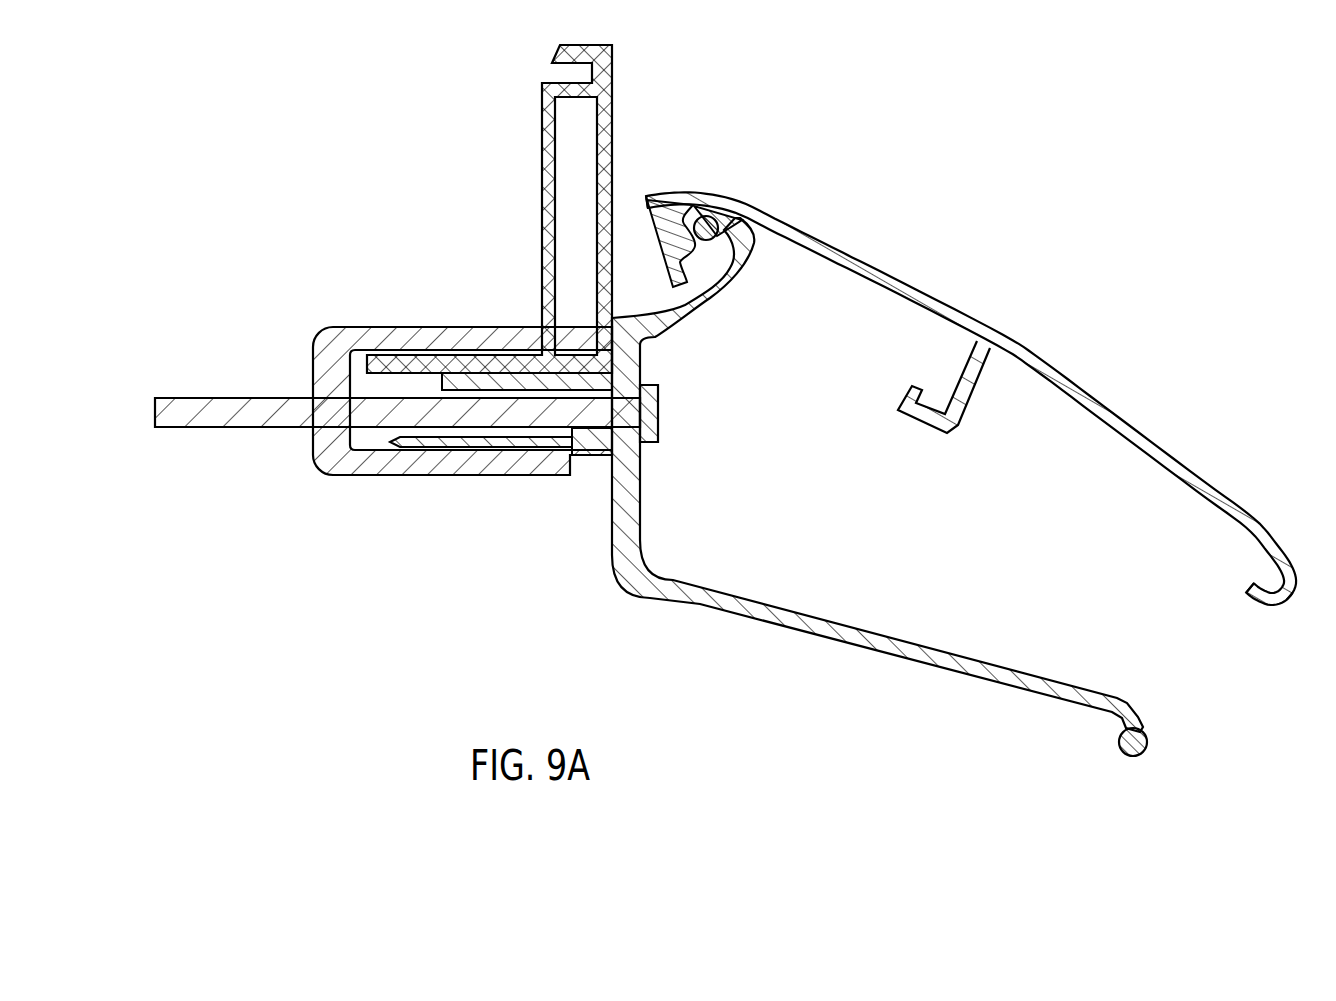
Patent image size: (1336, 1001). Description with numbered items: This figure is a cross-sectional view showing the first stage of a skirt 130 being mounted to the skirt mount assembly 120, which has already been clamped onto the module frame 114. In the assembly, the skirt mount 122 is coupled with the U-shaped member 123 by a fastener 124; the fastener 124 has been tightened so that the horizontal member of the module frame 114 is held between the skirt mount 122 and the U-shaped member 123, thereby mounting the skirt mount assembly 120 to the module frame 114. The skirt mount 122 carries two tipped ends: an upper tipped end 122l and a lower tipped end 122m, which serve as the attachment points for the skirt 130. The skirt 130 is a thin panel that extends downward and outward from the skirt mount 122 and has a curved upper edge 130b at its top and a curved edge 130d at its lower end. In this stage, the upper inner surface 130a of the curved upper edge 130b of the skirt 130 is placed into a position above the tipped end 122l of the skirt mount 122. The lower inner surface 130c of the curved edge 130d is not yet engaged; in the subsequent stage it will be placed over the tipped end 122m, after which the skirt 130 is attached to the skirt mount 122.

The skirt mount assembly 120 is at (786, 70).
The module frame 114 is at (521, 116).
The U-shaped member 123 is at (369, 309).
The fastener 124 is at (712, 422).
The skirt mount 122 is at (614, 603).
The tipped end 122l is at (672, 230).
The tipped end 122m is at (1128, 756).
The skirt 130 is at (1139, 390).
The upper inner surface 130a is at (695, 203).
The curved upper edge 130b is at (645, 202).
The lower inner surface 130c is at (1253, 582).
The curved upper edge 130d is at (1292, 600).